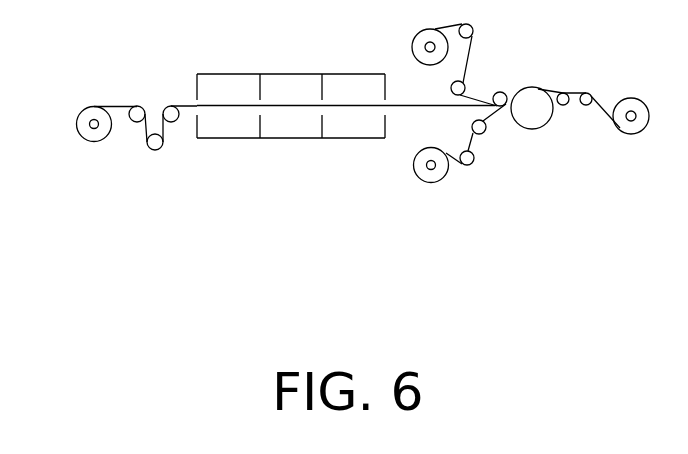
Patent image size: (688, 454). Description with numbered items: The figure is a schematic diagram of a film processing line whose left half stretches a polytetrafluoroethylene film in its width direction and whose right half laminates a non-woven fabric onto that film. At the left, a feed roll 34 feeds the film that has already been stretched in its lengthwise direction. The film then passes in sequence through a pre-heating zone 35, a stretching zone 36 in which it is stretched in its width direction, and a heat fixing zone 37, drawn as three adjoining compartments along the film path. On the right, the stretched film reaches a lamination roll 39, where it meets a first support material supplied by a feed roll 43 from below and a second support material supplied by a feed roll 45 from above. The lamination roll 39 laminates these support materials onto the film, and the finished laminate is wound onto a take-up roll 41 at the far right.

The feed roll 34 is at (88, 132).
The pre-heating zone 35 is at (227, 127).
The stretching zone 36 is at (290, 127).
The heat fixing zone 37 is at (350, 127).
The lamination roll 39 is at (533, 120).
The take-up roll 41 is at (630, 127).
The feed roll 43 is at (423, 177).
The feed roll 45 is at (420, 48).